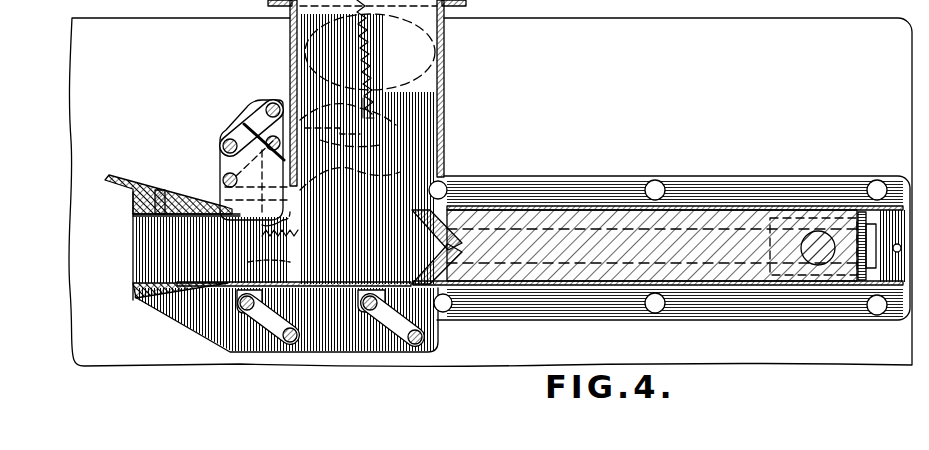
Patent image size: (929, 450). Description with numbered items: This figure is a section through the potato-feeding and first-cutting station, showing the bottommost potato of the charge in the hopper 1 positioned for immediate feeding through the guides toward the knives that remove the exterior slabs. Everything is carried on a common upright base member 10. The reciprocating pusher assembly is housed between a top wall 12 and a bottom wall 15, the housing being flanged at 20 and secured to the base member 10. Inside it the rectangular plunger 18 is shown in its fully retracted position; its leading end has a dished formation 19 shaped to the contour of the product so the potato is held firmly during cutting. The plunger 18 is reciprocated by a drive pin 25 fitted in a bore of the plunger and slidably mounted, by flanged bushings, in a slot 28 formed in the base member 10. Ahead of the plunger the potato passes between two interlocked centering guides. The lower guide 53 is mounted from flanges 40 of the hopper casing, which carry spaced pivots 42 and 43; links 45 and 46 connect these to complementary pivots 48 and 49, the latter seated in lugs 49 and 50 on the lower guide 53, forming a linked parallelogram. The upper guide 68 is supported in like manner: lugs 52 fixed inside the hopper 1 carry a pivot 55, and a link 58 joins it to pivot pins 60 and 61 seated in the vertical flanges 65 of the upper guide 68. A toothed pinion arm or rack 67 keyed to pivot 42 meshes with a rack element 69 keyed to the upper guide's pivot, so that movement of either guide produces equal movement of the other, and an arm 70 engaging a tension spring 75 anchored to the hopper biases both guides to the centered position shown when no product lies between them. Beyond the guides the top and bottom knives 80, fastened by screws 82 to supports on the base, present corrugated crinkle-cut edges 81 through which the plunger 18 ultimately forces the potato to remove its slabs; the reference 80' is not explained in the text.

The upright base member 10 is at (88, 67).
The hopper 1 is at (453, 73).
The tension spring 75 is at (378, 58).
The arm 70 is at (338, 150).
The vertical flanges 65 is at (224, 162).
The pivot 55 is at (266, 106).
The link 58 is at (246, 128).
The lugs 52 is at (283, 104).
The pivot pin 60 is at (222, 145).
The pivot pin 61 is at (222, 182).
The cutting knives 80 is at (168, 177).
The screws 82 is at (160, 192).
The cutting edge 81 is at (222, 216).
The upper guide member 68 is at (240, 222).
The rack element 69 is at (262, 228).
The pinion arm or rack 67 is at (258, 262).
The lower guide 53 is at (330, 282).
The flanges 40 is at (440, 340).
The pivot pin 43 is at (440, 350).
The sloped plate 80' is at (180, 300).
The pivot / lug 49 is at (240, 297).
The lugs 50 is at (362, 298).
The link 45 is at (272, 333).
The link 46 is at (388, 326).
The pivot pin 48 is at (244, 312).
The pivot pin 42 is at (298, 330).
The top wall 12 is at (558, 210).
The slot 28 is at (522, 206).
The bottom wall 15 is at (574, 286).
The plunger 18 is at (720, 215).
The drive pin 25 is at (822, 231).
The flange 20 is at (830, 184).
The dished formation 19 is at (420, 228).